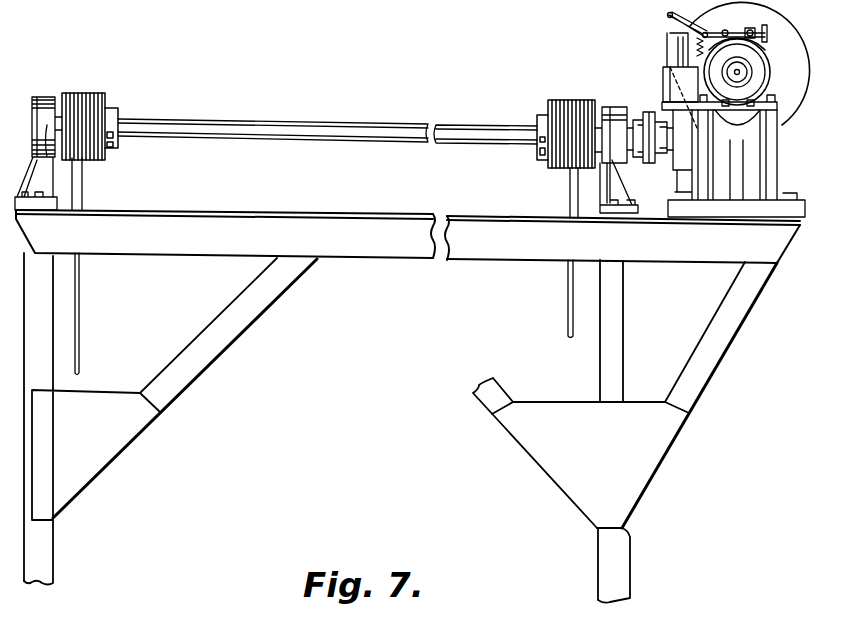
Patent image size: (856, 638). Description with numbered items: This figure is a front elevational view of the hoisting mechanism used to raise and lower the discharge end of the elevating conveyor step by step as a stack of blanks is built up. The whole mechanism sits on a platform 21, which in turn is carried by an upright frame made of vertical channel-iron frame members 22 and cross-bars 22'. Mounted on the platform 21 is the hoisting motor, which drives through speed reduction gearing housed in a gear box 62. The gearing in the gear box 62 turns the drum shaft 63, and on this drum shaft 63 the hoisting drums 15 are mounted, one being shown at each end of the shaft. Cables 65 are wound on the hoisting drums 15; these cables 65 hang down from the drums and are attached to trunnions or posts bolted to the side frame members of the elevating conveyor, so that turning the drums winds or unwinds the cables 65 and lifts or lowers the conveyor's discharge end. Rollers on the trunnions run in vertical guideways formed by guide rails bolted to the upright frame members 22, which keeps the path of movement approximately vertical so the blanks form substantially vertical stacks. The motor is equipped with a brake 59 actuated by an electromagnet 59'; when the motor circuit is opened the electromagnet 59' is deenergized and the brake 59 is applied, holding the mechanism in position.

The hoisting drums 15 is at (90, 96).
The platform 21 is at (648, 218).
The vertical channel-iron frame members 22 is at (400, 428).
The cross-bars 22' is at (408, 252).
The brake 59 is at (736, 63).
The electromagnet 59' is at (696, 70).
The gear box 62 is at (683, 155).
The drum shaft 63 is at (507, 112).
The cables 65 is at (83, 186).